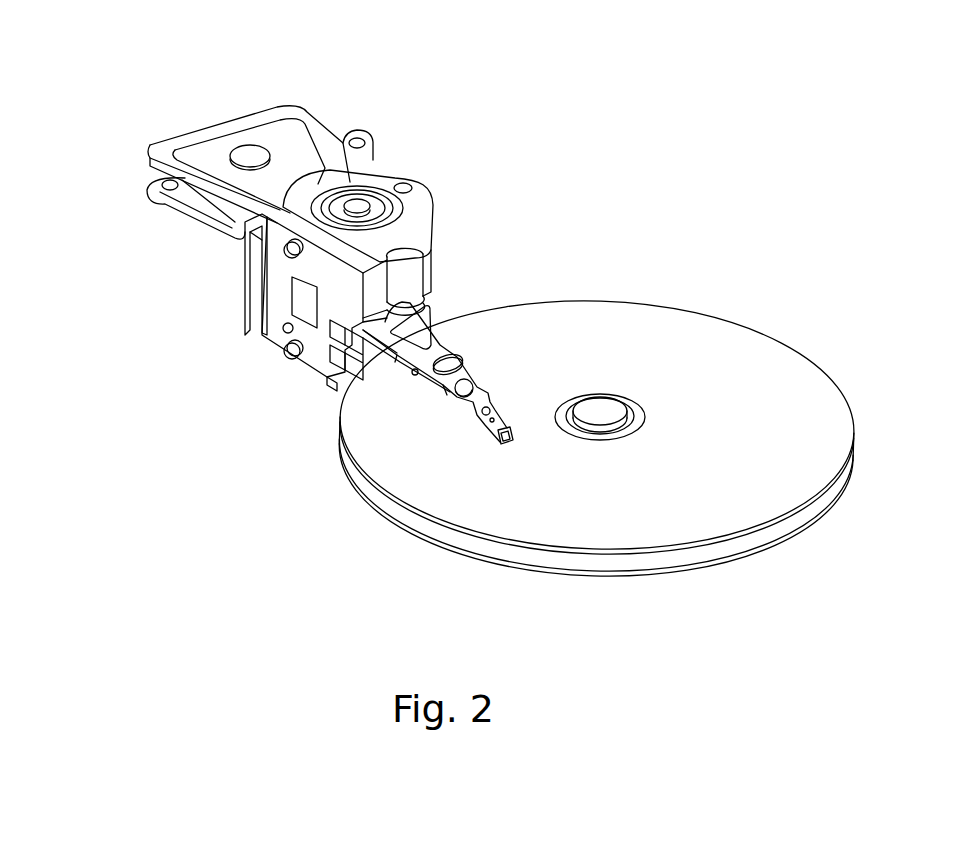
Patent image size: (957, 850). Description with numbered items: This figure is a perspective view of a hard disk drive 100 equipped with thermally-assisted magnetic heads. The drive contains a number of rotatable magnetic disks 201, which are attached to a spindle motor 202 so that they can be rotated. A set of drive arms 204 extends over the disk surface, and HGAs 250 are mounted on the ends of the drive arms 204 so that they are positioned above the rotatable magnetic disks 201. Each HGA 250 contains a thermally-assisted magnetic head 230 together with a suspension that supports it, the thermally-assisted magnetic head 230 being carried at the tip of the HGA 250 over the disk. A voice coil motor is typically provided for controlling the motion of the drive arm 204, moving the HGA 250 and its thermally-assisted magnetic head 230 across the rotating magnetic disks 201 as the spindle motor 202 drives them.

The disk drive unit 100 is at (48, 45).
The rotatable magnetic disk 201 is at (728, 398).
The spindle motor 202 is at (605, 410).
The drive arm 204 is at (443, 347).
The HGA 250 is at (480, 390).
The thermally-assisted magnetic head 230 is at (508, 432).